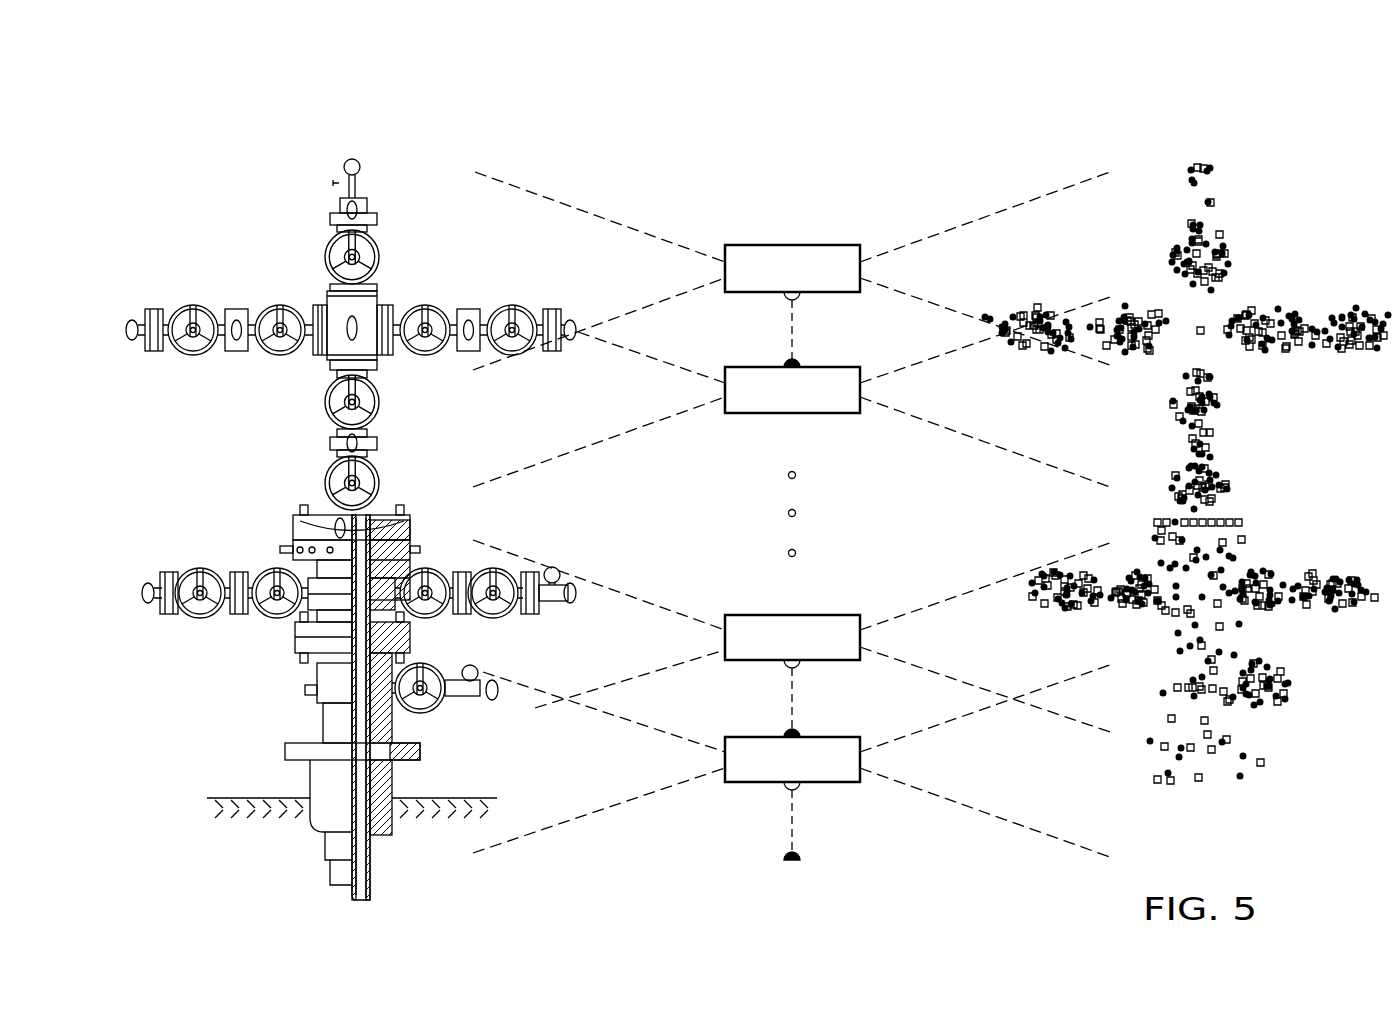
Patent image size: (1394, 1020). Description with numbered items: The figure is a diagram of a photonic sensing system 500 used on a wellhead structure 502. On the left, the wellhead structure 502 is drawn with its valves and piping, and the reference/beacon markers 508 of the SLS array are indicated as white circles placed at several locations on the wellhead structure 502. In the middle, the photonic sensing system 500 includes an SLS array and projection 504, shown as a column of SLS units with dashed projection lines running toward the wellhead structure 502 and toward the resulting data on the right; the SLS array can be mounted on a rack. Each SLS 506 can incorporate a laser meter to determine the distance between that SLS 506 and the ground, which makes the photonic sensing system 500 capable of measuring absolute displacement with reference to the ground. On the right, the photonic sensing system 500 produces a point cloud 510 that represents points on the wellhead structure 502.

The photonic sensing system 500 is at (500, 56).
The wellhead structure 502 is at (577, 157).
The SLS array and projection 504 is at (585, 157).
The SLS 506 is at (865, 872).
The reference/beacon markers 508 is at (492, 703).
The point cloud 510 is at (1022, 157).